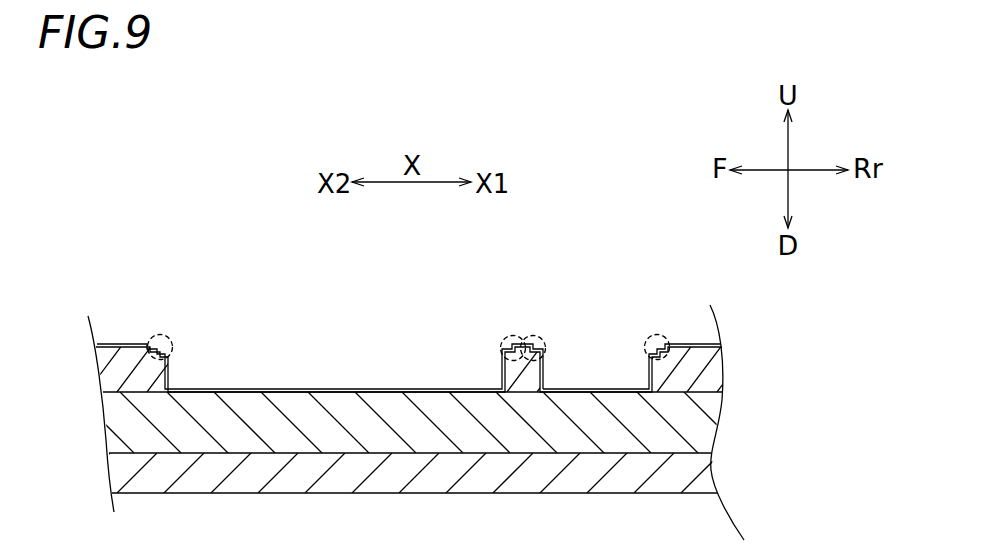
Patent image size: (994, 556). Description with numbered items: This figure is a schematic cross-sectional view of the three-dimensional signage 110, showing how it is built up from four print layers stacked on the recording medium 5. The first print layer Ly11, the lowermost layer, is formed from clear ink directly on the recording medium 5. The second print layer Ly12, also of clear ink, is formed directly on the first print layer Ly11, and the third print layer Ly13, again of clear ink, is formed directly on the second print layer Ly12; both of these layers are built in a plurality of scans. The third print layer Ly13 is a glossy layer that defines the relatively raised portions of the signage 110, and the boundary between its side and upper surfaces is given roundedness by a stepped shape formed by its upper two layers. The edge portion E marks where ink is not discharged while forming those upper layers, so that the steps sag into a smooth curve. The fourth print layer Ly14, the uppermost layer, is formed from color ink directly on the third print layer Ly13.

The recording medium 5 is at (712, 528).
The 3D signage 110 is at (121, 345).
The edge portion E is at (651, 340).
The first print layer Ly11 is at (698, 470).
The second print layer Ly12 is at (698, 427).
The third print layer Ly13 is at (712, 374).
The fourth print layer Ly14 is at (683, 343).